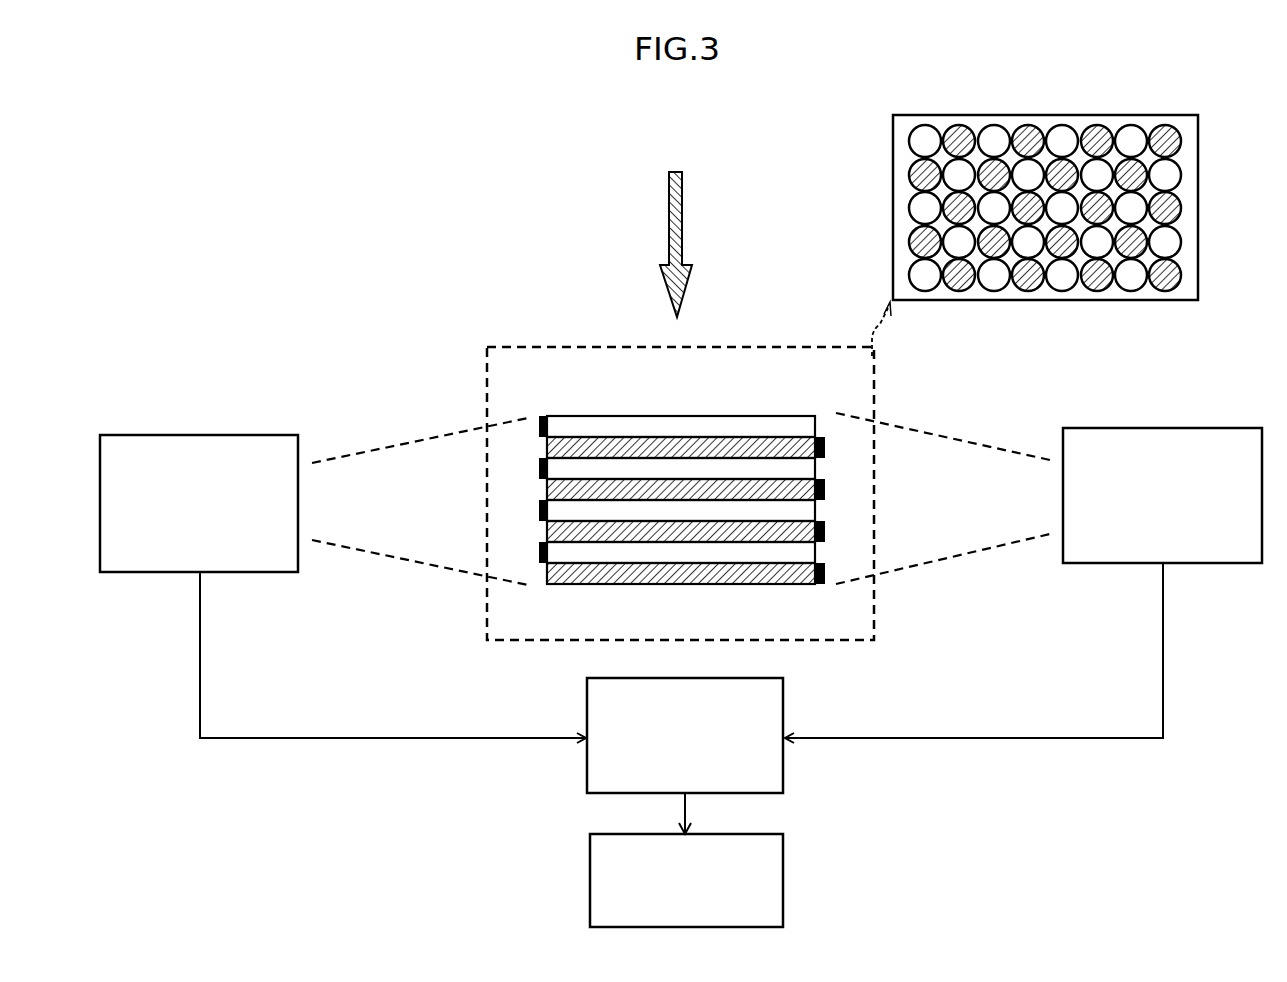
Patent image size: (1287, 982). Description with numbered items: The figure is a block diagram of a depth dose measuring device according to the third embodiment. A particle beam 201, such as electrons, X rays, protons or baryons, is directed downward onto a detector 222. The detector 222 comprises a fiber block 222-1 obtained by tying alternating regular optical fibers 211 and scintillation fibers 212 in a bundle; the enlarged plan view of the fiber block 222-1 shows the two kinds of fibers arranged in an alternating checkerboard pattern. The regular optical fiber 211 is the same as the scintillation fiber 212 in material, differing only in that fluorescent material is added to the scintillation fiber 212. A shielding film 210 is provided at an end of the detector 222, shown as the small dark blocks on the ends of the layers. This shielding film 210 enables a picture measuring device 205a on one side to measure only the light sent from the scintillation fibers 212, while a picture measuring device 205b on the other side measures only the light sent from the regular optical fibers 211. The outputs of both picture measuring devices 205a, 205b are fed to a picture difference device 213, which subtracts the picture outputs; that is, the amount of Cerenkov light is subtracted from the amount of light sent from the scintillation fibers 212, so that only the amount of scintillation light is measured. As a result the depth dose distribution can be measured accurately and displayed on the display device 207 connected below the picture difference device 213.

The particle beam 201 is at (683, 215).
The detector 222 is at (580, 347).
The fiber block 222-1 is at (921, 115).
The shielding film 210 is at (543, 418).
The regular optical fiber 211 is at (653, 428).
The scintillation fiber 212 is at (652, 580).
The picture measuring device 205a is at (198, 435).
The picture measuring device 205b is at (1162, 428).
The picture difference device 213 is at (783, 757).
The display device 207 is at (783, 880).